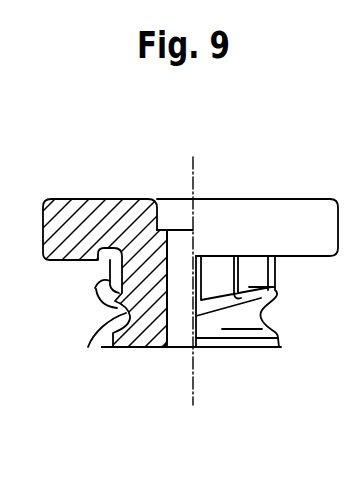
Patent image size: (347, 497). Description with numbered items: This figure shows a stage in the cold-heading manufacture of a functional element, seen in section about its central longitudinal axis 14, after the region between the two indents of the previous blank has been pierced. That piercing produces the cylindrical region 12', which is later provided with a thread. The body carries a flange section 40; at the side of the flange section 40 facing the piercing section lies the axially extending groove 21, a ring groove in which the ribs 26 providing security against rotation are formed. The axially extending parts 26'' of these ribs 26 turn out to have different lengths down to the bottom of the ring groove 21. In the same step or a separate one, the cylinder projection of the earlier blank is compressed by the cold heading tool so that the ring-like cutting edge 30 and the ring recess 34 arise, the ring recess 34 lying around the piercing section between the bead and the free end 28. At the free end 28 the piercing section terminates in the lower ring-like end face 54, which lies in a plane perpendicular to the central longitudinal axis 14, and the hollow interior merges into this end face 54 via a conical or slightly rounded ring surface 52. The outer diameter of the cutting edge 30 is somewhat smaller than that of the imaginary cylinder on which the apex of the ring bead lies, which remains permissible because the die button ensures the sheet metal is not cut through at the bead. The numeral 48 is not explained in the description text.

The axially extending groove 21 is at (112, 244).
The cylindrical region 12' is at (174, 172).
The central longitudinal axis 14 is at (197, 163).
The flange section 40 is at (293, 212).
The free end 28 is at (261, 348).
The ribs providing security against rotation 26 is at (78, 280).
The axially extending parts of the ribs 26'' is at (75, 303).
The ring recess 34 is at (99, 348).
The ring-like cutting edge 30 is at (108, 349).
The ring-like end face 54 is at (137, 349).
The ring surface 52 is at (168, 349).
The flange 48 is at (178, 303).